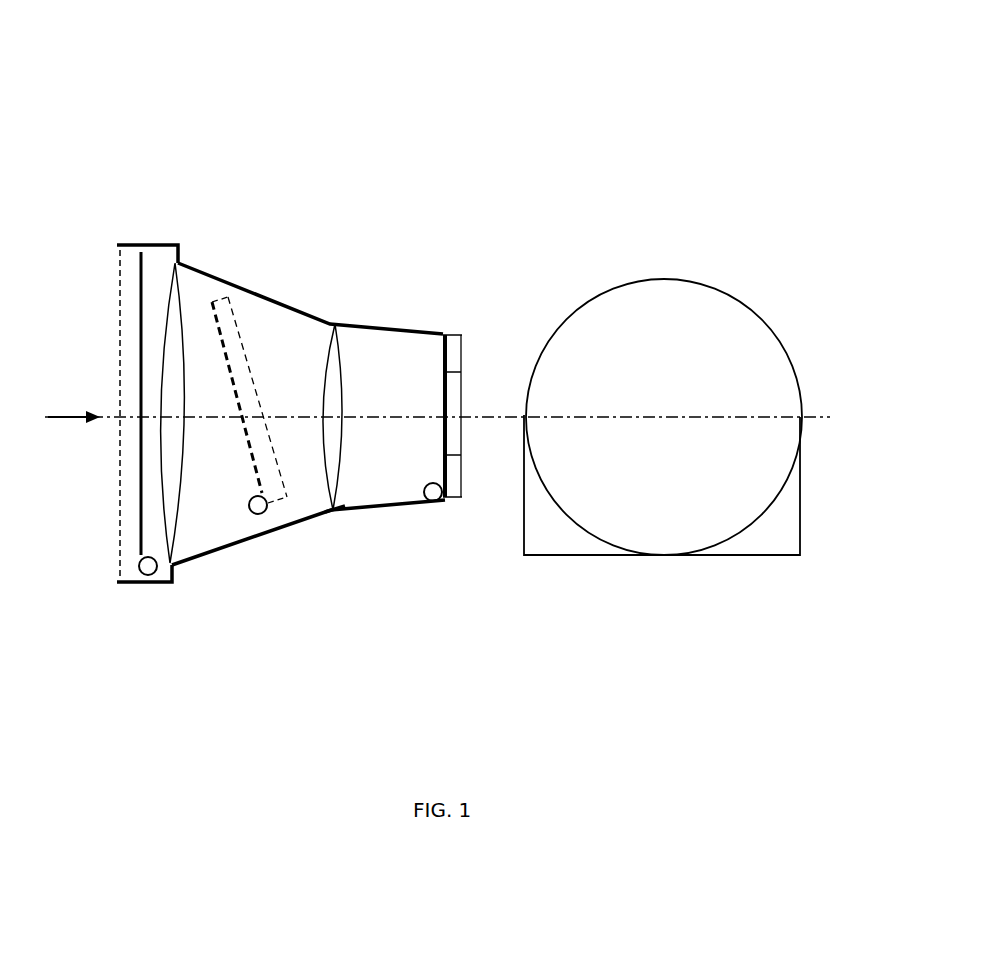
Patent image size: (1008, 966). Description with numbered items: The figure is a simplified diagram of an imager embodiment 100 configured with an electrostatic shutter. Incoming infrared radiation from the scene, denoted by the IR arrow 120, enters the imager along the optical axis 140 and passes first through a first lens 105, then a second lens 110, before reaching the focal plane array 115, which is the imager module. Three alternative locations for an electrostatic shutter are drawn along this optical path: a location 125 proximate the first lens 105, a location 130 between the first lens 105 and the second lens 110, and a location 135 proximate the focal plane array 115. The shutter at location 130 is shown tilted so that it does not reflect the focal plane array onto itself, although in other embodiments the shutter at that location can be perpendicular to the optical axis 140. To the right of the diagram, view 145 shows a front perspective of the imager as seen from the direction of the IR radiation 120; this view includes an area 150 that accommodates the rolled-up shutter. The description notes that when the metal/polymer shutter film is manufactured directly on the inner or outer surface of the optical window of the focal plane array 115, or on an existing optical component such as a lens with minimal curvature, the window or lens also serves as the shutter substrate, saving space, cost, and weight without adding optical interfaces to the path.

The imager embodiment 100 is at (76, 58).
The first lens 105 is at (180, 540).
The second lens 110 is at (342, 495).
The focal plane array (imager module) 115 is at (450, 497).
The IR arrow 120 is at (76, 422).
The shutter location proximate first lens 125 is at (160, 290).
The shutter location between first and second lens 130 is at (296, 333).
The shutter location proximate focal plane array 135 is at (431, 376).
The optical axis 140 is at (508, 417).
The view (front perspective of the imager) 145 is at (641, 278).
The area accommodating rolled-up shutter 150 is at (738, 556).